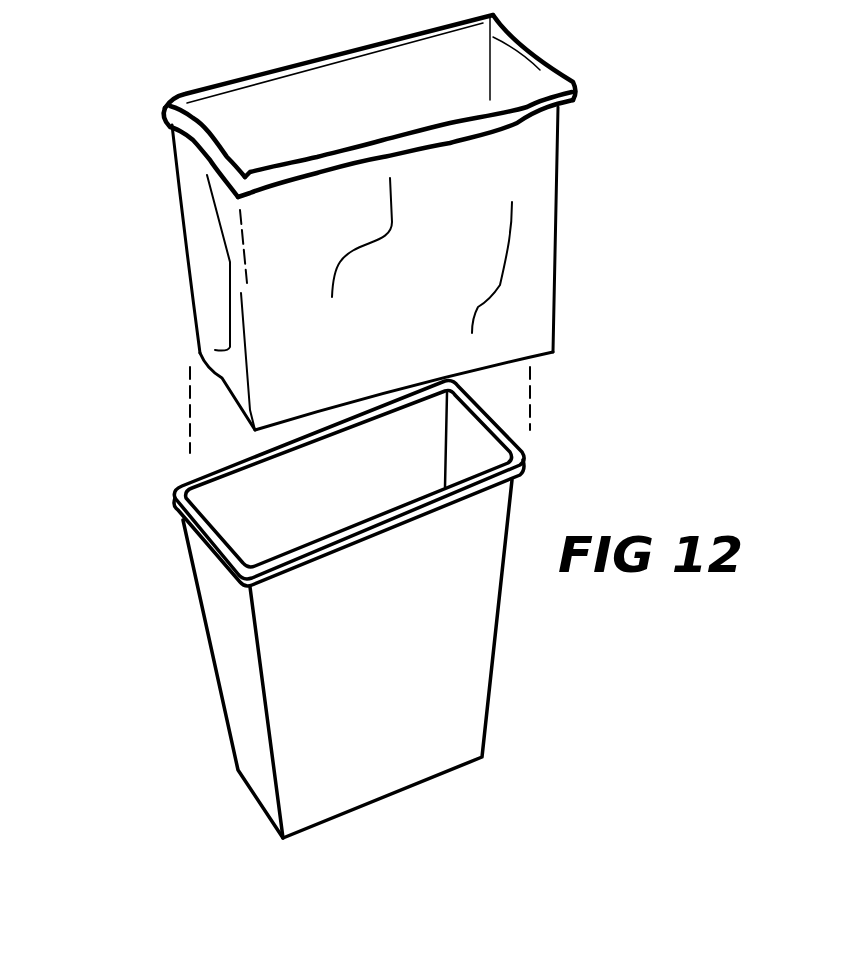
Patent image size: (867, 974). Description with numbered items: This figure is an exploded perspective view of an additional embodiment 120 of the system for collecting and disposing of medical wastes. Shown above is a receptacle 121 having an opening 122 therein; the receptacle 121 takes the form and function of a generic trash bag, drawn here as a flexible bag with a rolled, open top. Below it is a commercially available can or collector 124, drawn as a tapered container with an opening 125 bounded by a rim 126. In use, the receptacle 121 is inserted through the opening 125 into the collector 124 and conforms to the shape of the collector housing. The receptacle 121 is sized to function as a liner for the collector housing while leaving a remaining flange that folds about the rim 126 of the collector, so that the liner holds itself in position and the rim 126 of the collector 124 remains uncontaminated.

The system for collecting and disposing of medical wastes 120 is at (152, 303).
The receptacle 121 is at (178, 188).
The opening 122 is at (370, 84).
The collector 124 is at (172, 661).
The opening 125 is at (244, 514).
The rim 126 is at (175, 495).